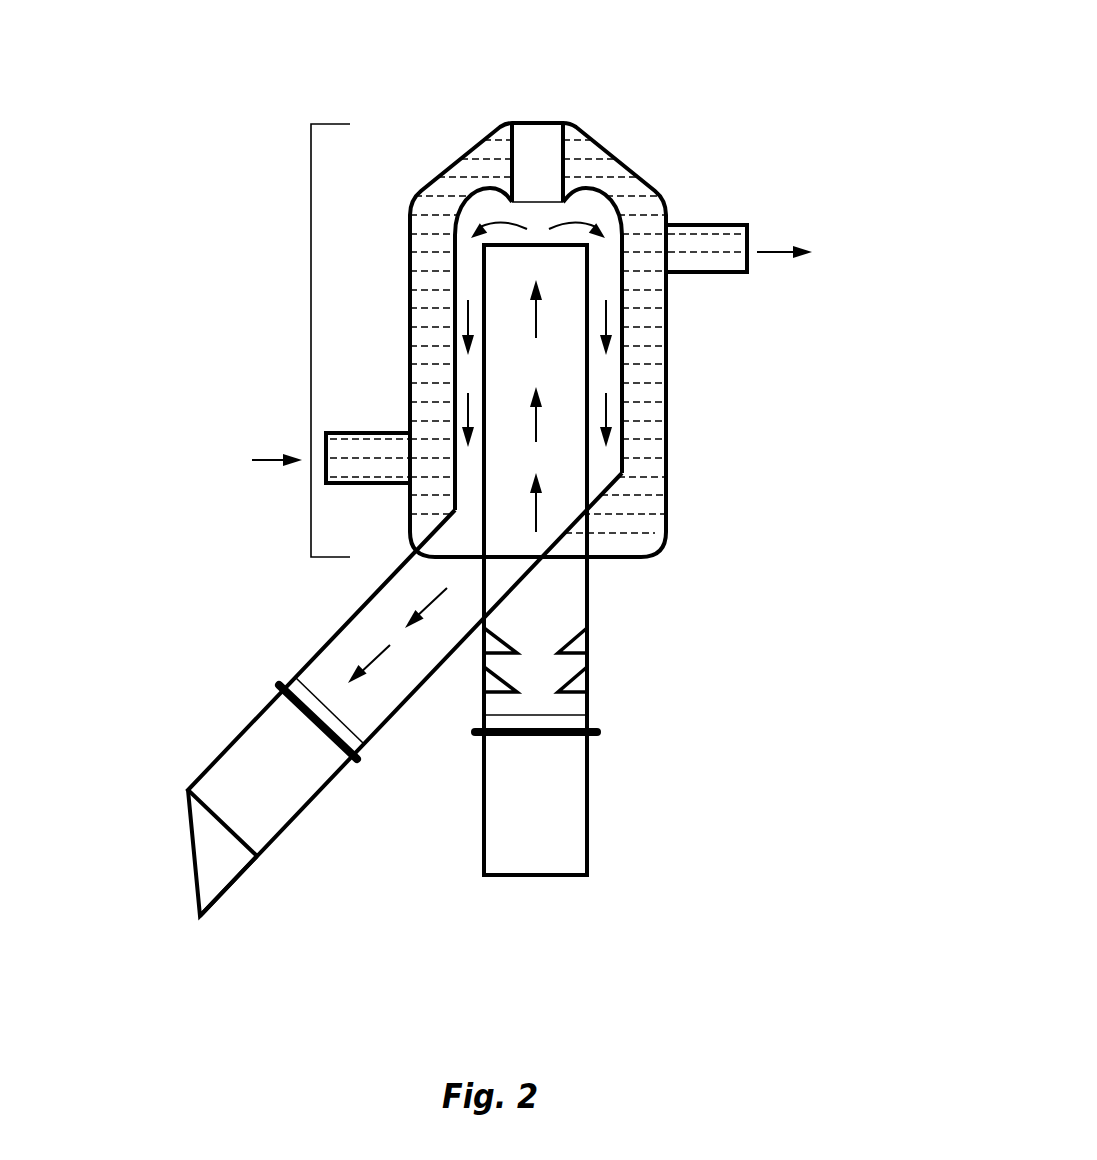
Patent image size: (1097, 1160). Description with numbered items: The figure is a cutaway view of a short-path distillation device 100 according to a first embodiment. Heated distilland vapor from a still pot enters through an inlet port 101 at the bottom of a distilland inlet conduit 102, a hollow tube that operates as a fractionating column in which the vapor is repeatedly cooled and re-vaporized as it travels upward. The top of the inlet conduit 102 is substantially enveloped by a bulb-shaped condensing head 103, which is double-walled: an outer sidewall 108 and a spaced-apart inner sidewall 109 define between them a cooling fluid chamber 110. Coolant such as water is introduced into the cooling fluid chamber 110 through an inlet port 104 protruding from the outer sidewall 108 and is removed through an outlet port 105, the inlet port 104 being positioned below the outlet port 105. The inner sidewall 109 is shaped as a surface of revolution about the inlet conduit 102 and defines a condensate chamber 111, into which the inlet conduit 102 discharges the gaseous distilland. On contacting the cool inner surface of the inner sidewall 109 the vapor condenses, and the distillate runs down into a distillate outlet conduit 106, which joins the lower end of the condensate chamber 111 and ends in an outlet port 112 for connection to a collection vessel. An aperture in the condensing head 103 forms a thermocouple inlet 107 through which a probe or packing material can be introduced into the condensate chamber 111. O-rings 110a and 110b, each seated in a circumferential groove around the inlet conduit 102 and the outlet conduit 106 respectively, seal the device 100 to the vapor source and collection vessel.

The short-path distillation device 100 is at (846, 62).
The inlet port 101 is at (537, 876).
The distilland inlet conduit 102 is at (590, 597).
The condensing head 103 is at (310, 290).
The inlet port 104 is at (374, 433).
The outlet port 105 is at (748, 225).
The distillate outlet conduit 106 is at (337, 630).
The thermocouple inlet 107 is at (537, 122).
The outer sidewall 108 is at (613, 160).
The inner sidewall 109 is at (613, 215).
The cooling fluid chamber 110 is at (647, 383).
The O-ring 110a is at (567, 737).
The O-ring 110b is at (287, 700).
The condensate chamber 111 is at (612, 282).
The outlet port 112 is at (185, 839).